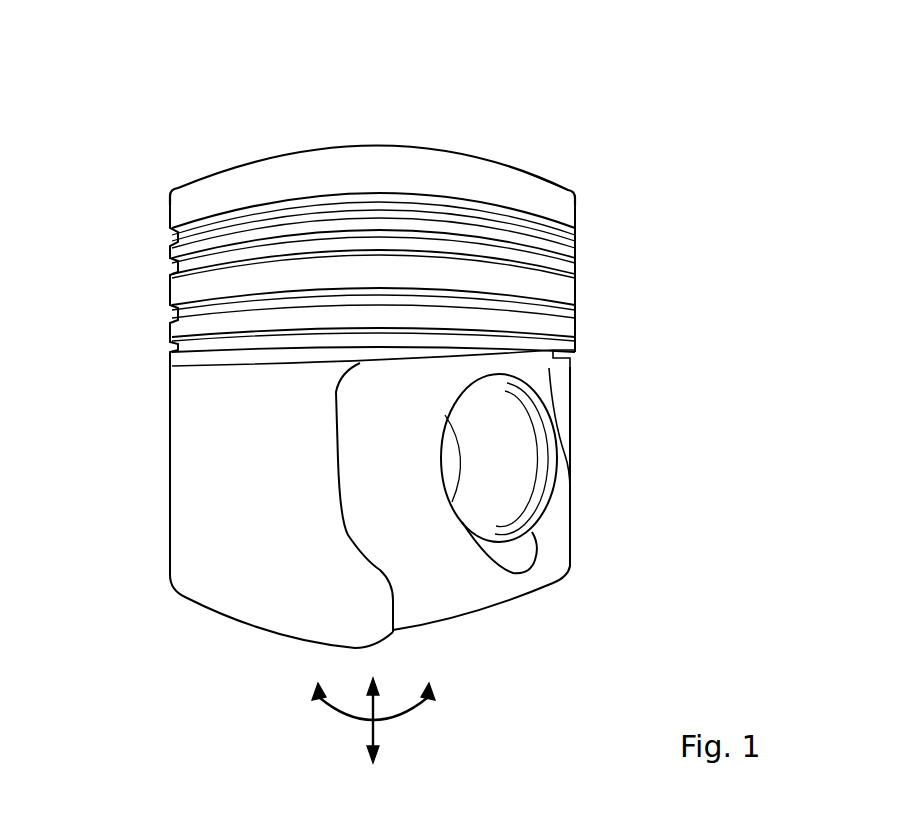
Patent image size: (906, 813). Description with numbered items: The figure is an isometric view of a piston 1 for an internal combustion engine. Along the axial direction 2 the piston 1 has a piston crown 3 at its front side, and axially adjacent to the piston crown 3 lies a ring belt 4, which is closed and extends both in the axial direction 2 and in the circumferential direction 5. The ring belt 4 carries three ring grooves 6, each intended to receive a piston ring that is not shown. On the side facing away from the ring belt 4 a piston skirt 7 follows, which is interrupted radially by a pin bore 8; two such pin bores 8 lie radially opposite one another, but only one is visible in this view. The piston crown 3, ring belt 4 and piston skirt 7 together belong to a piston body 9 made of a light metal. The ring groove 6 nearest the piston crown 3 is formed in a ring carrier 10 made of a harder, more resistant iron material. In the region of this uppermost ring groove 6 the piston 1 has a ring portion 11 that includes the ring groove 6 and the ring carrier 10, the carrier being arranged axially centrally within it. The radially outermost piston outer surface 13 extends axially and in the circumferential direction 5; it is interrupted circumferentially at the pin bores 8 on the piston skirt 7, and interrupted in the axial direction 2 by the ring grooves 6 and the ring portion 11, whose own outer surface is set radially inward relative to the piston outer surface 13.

The piston 1 is at (698, 153).
The axial direction 2 is at (377, 737).
The piston crown 3 is at (370, 147).
The ring belt 4 is at (391, 279).
The circumferential direction 5 is at (345, 714).
The ring groove 6 is at (422, 279).
The piston skirt 7 is at (152, 455).
The pin bore 8 is at (522, 462).
The piston body 9 is at (528, 153).
The ring carrier 10 is at (553, 235).
The ring portion 11 is at (582, 235).
The piston outer surface 13 is at (609, 307).